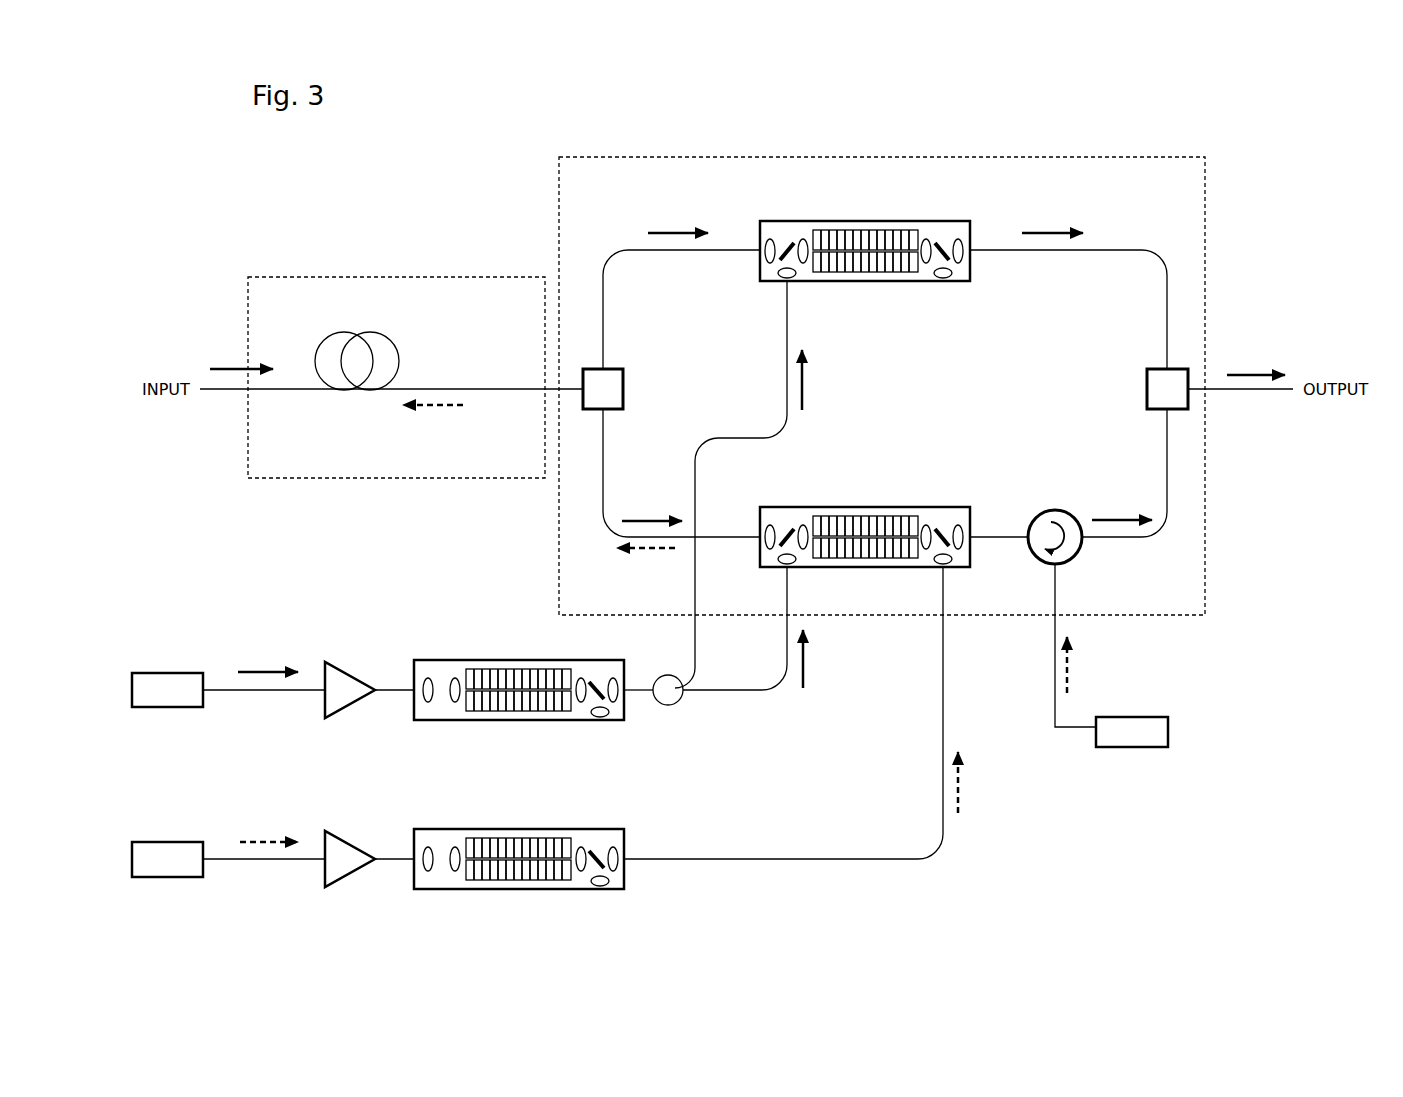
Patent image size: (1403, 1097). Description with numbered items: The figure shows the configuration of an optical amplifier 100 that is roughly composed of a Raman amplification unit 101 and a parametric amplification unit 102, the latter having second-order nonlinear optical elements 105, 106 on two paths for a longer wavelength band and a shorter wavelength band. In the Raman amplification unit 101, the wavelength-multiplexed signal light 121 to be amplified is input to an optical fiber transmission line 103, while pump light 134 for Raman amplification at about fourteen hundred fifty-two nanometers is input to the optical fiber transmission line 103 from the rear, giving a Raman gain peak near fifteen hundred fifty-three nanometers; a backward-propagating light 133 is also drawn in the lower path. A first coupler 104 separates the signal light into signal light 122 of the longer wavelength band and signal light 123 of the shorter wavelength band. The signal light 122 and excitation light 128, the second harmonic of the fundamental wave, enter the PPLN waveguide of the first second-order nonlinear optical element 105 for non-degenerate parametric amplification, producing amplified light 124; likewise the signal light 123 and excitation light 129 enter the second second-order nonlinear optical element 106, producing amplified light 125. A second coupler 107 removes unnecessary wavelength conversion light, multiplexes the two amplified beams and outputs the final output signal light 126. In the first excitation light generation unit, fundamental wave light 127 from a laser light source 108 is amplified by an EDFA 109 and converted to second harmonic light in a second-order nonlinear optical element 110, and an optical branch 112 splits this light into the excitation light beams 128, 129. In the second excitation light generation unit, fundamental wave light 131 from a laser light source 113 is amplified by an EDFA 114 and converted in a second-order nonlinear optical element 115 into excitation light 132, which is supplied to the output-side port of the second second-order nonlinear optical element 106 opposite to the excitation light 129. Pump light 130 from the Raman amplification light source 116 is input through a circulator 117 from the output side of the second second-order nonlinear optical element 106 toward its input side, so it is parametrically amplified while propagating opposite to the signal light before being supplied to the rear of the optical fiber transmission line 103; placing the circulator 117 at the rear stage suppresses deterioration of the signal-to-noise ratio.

The optical amplifier 100 is at (1300, 143).
The Raman amplification unit 101 is at (392, 277).
The parametric amplification unit 102 is at (1165, 157).
The optical fiber transmission line 103 is at (388, 343).
The first coupler (branching unit) 104 is at (617, 369).
The first second-order nonlinear optical element 105 is at (789, 221).
The second second-order nonlinear optical element 106 is at (791, 507).
The second coupler 107 is at (1150, 369).
The laser light source 108 is at (166, 673).
The EDFA 109 is at (347, 672).
The second-order nonlinear optical element 110 is at (438, 660).
The optical branch 112 is at (668, 705).
The laser light source 113 is at (166, 842).
The EDFA 114 is at (347, 842).
The second-order nonlinear optical element 115 is at (438, 829).
The Raman amplification light source 116 is at (1134, 747).
The circulator 117 is at (1055, 510).
The signal light 121 is at (215, 365).
The signal light having the longer wavelength band 122 is at (674, 229).
The signal light having the shorter wavelength band 123 is at (650, 517).
The amplified light 124 is at (1042, 229).
The amplified light 125 is at (1106, 516).
The final output signal light 126 is at (1250, 372).
The fundamental wave light 127 is at (253, 668).
The excitation light (SH light 1) 128 is at (808, 382).
The excitation light (SH light 1) 129 is at (808, 664).
The pump light for Raman amplification 130 is at (1074, 660).
The fundamental wave light 131 is at (253, 838).
The excitation light (SH light 2) 132 is at (966, 790).
The backward propagating light in lower arm 133 is at (664, 556).
The pump light for Raman amplification 134 is at (445, 413).